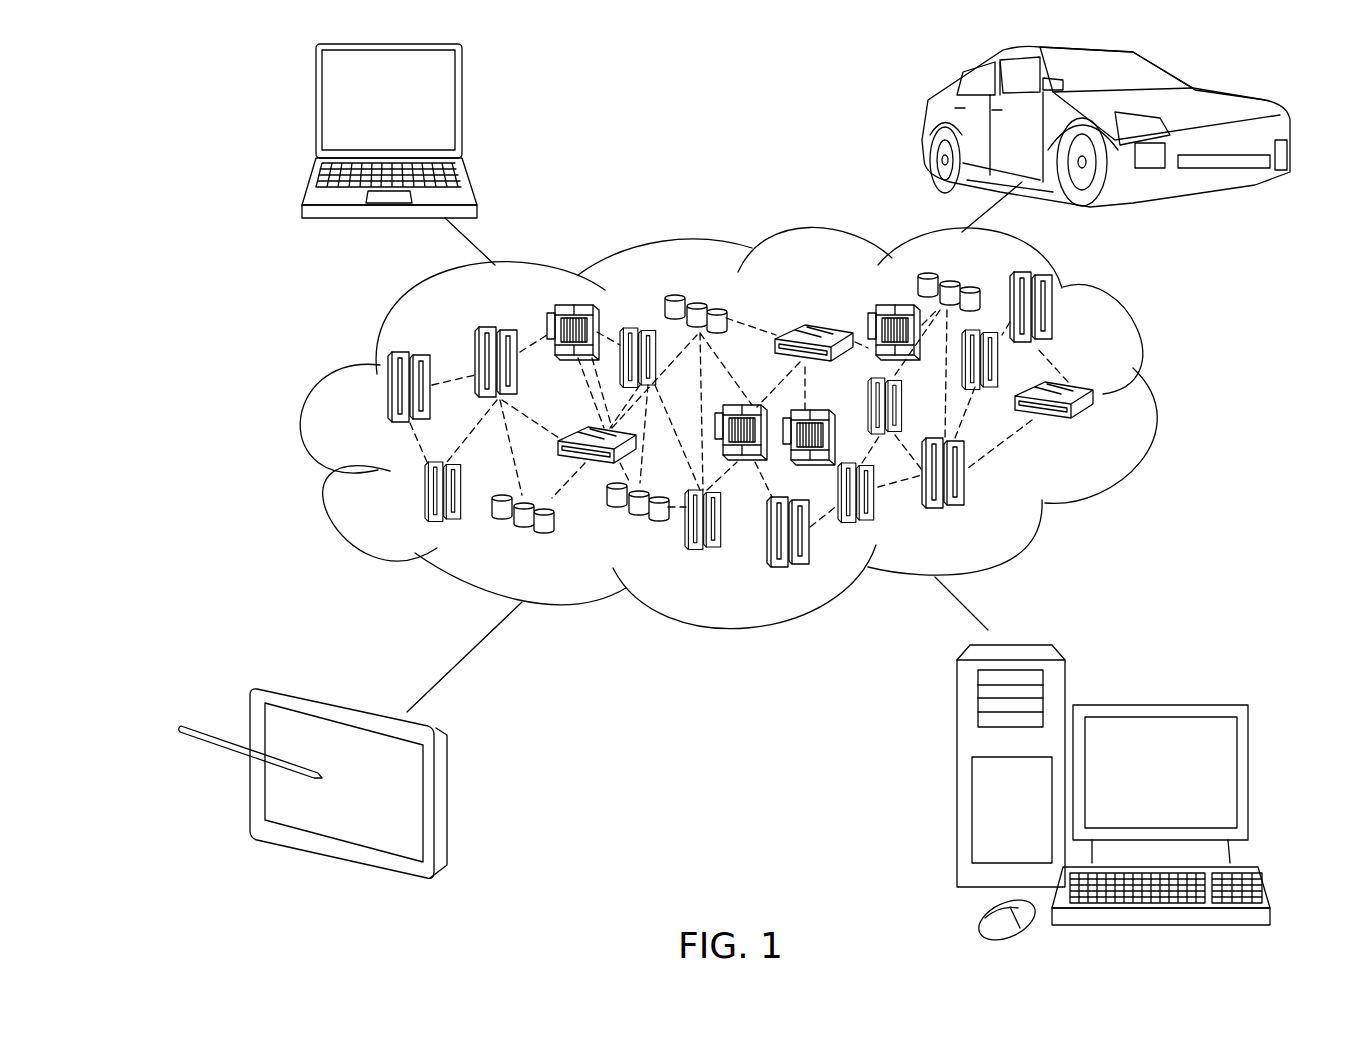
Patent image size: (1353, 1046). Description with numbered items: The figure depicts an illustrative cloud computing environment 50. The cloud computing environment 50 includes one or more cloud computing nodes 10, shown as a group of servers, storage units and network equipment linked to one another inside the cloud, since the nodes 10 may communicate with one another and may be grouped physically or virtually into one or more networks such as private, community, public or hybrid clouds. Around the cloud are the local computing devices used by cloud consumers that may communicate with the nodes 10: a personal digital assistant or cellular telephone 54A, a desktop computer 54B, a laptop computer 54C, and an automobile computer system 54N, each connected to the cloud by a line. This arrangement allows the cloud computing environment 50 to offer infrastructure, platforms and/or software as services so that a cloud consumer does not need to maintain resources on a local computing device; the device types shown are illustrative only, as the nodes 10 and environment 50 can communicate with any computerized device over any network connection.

The cloud computing nodes 10 is at (1100, 431).
The cloud computing environment 50 is at (1157, 397).
The personal digital assistant (PDA) or cellular telephone 54A is at (448, 802).
The desktop computer 54B is at (1157, 703).
The laptop computer 54C is at (462, 108).
The automobile computer system 54N is at (922, 125).